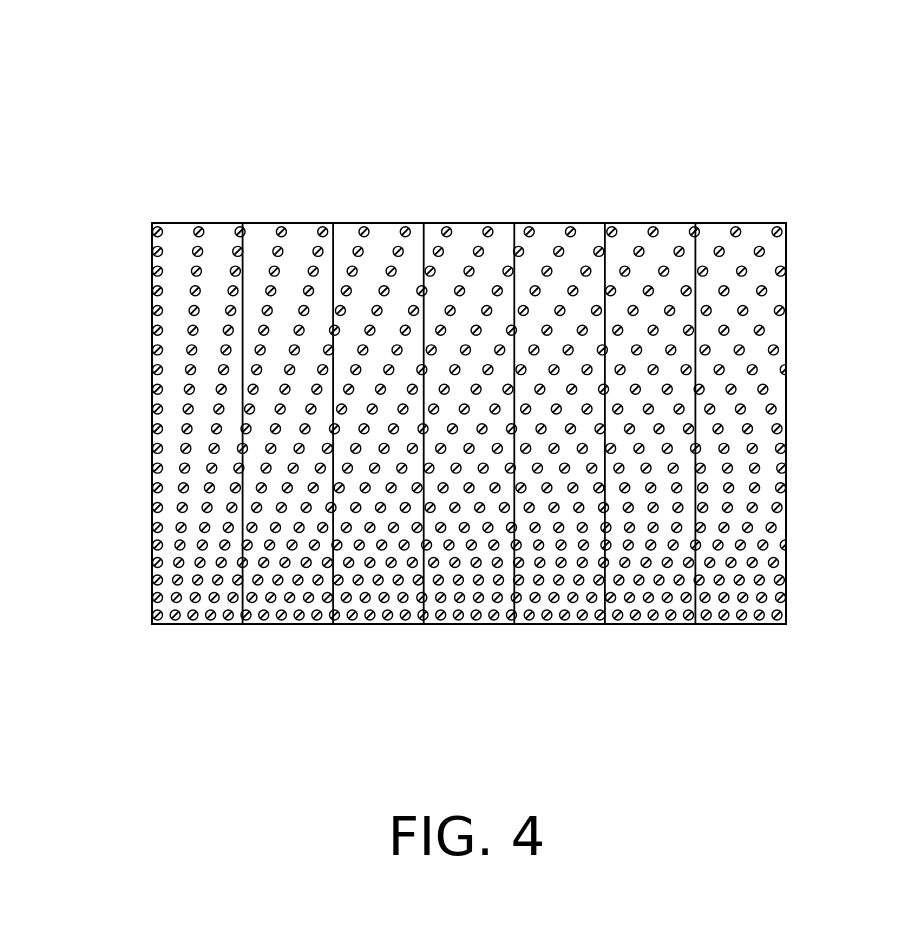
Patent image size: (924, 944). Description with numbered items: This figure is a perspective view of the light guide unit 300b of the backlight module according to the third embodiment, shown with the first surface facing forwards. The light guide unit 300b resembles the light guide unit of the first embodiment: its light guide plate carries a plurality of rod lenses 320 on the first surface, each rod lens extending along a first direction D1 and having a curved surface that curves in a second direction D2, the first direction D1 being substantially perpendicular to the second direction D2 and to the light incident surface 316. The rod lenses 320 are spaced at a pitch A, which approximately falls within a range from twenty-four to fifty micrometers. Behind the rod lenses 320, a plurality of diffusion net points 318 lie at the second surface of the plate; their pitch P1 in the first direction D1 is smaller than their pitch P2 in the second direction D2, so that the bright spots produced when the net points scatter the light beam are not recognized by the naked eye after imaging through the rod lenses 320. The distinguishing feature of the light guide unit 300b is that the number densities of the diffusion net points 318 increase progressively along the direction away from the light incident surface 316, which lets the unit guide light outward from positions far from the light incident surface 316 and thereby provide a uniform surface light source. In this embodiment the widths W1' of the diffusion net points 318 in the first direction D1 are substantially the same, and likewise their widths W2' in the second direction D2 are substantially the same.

The light guide unit 300b is at (528, 410).
The light incident surface 316 is at (720, 222).
The diffusion net points 318 is at (321, 226).
The rod lenses 320 is at (605, 633).
The pitch in the first direction P1 is at (143, 230).
The pitch in the second direction P2 is at (248, 183).
The width in the first direction W1' is at (110, 373).
The width in the second direction W2' is at (540, 177).
The pitch of the rod lenses A is at (742, 638).
The first direction D1 is at (429, 138).
The second direction D2 is at (508, 65).